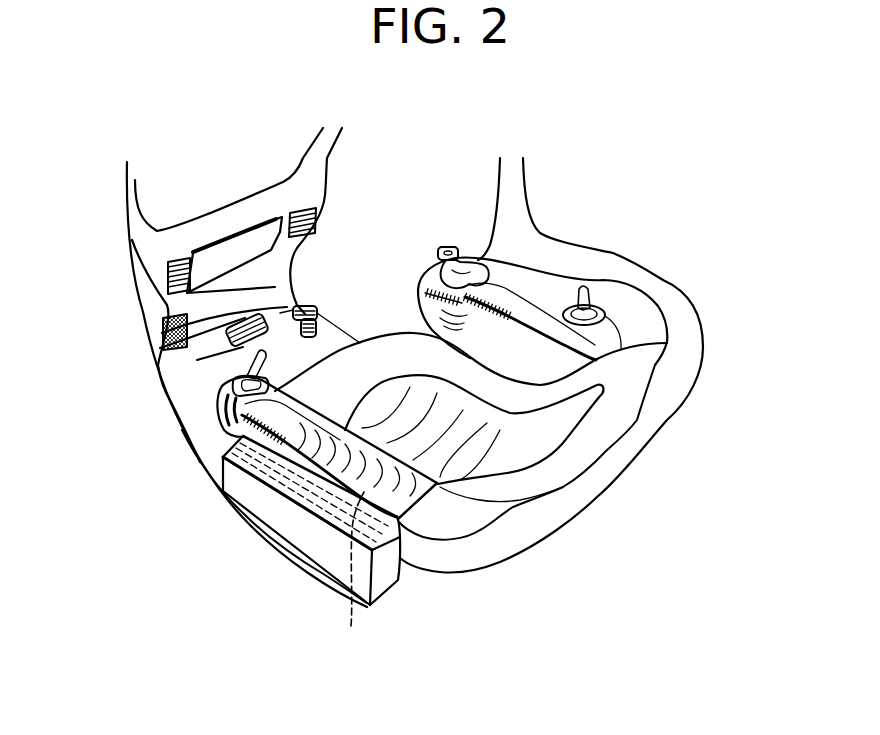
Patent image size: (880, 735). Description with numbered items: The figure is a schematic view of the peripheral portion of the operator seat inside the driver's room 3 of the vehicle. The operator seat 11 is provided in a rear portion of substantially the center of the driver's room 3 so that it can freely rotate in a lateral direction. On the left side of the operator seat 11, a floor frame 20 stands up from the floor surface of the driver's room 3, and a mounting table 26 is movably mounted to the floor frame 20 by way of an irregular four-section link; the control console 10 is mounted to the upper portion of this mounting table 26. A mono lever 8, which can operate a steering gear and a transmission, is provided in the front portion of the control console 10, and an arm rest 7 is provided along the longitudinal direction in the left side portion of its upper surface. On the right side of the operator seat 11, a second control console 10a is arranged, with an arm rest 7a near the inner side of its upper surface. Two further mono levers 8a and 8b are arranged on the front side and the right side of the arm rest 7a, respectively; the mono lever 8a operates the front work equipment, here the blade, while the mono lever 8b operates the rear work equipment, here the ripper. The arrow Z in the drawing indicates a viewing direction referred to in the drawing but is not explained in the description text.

The driver's room 3 is at (660, 256).
The arm rest 7 is at (277, 448).
The arm rest 7a is at (525, 305).
The mono lever 8 is at (250, 360).
The mono lever 8a is at (447, 247).
The mono lever 8b is at (657, 281).
The control console 10 is at (218, 405).
The control console 10a is at (507, 276).
The operator seat 11 is at (593, 433).
The floor frame 20 is at (313, 541).
The mounting table 26 is at (347, 577).
The viewing direction Z is at (210, 502).